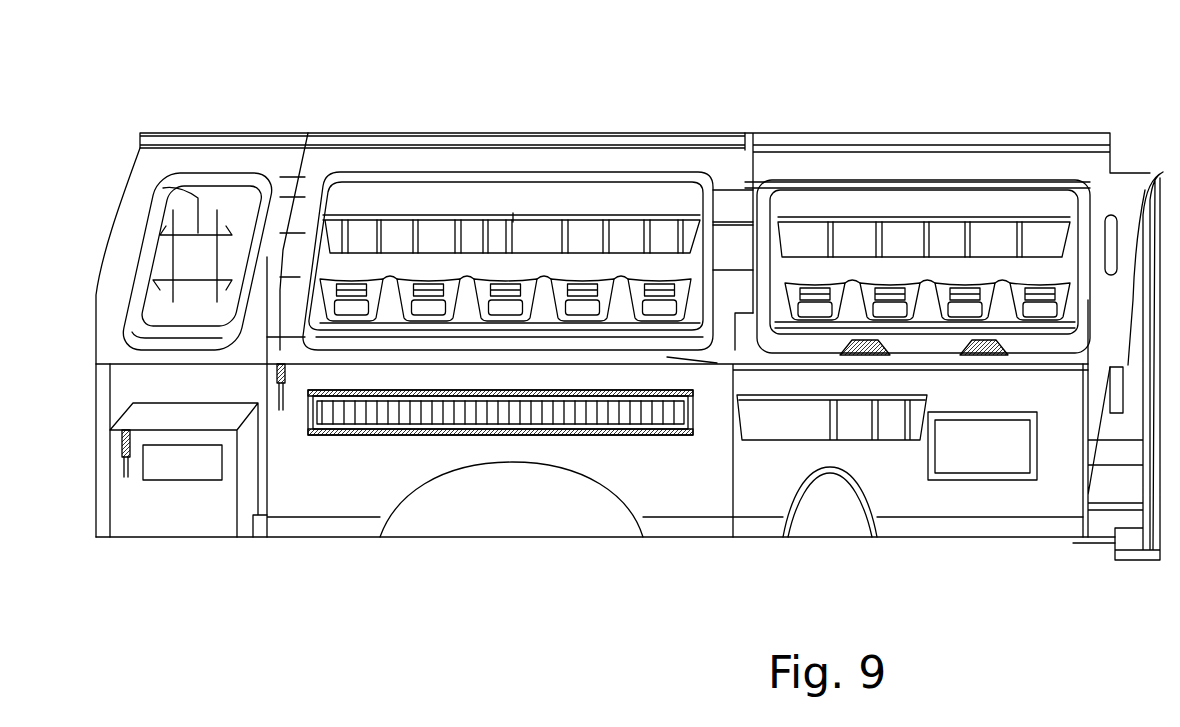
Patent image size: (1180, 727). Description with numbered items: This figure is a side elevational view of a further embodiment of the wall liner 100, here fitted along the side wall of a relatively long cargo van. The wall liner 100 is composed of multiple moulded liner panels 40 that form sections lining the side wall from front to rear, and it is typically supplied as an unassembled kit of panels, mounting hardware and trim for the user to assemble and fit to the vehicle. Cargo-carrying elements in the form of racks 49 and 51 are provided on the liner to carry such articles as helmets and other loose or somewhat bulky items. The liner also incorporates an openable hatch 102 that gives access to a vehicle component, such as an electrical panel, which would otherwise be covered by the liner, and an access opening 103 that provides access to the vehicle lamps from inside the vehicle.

The wall liner 100 is at (560, 78).
The moulded liner panel 40 is at (236, 168).
The rack 49 is at (190, 189).
The rack 51 is at (275, 373).
The openable hatch 102 is at (952, 458).
The access opening 103 is at (203, 468).